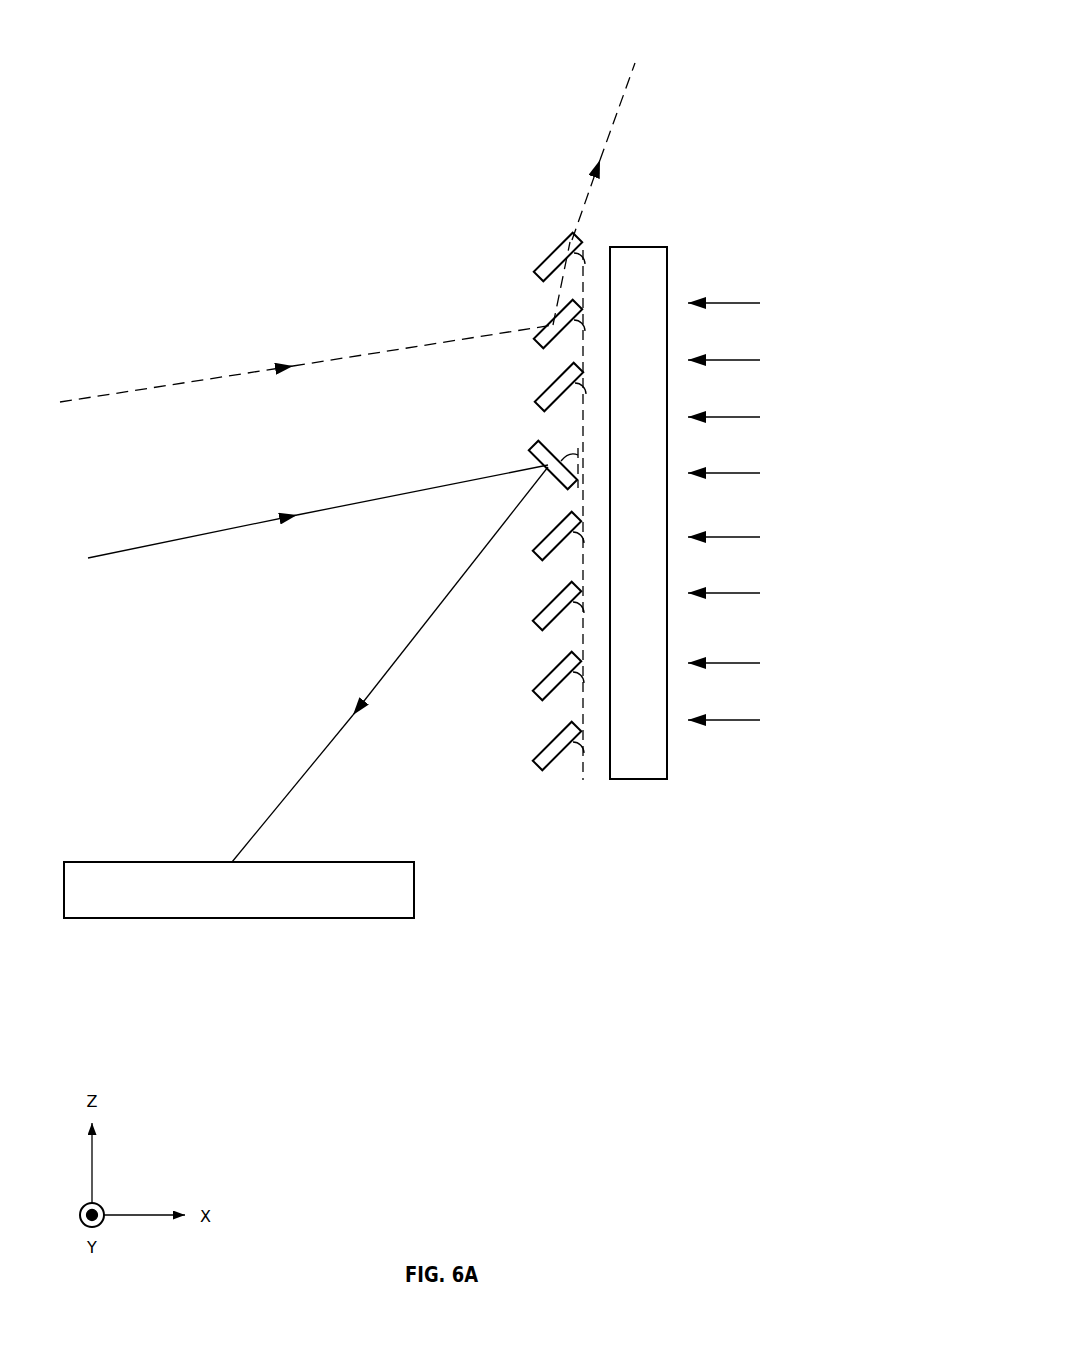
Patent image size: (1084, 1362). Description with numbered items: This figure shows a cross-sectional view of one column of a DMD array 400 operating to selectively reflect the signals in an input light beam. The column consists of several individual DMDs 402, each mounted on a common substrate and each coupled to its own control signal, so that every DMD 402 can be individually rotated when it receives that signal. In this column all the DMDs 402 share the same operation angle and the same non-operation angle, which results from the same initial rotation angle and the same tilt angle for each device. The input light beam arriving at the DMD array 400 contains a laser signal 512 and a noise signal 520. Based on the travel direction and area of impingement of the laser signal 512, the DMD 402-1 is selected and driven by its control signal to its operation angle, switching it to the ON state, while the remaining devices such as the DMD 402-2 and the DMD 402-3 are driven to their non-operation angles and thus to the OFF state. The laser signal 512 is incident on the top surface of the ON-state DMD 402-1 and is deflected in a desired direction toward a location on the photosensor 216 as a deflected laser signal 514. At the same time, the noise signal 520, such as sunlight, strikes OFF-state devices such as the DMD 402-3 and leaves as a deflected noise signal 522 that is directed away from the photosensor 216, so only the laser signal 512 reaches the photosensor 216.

The DMD array 400 is at (458, 25).
The DMD 402 is at (537, 187).
The DMD 402-1 is at (552, 468).
The DMD 402-2 is at (553, 391).
The DMD 402-3 is at (553, 323).
The noise signal 520 is at (178, 384).
The deflected noise signal 522 is at (620, 95).
The laser signal 512 is at (185, 538).
The deflected laser signal 514 is at (325, 742).
The photosensor 216 is at (224, 898).